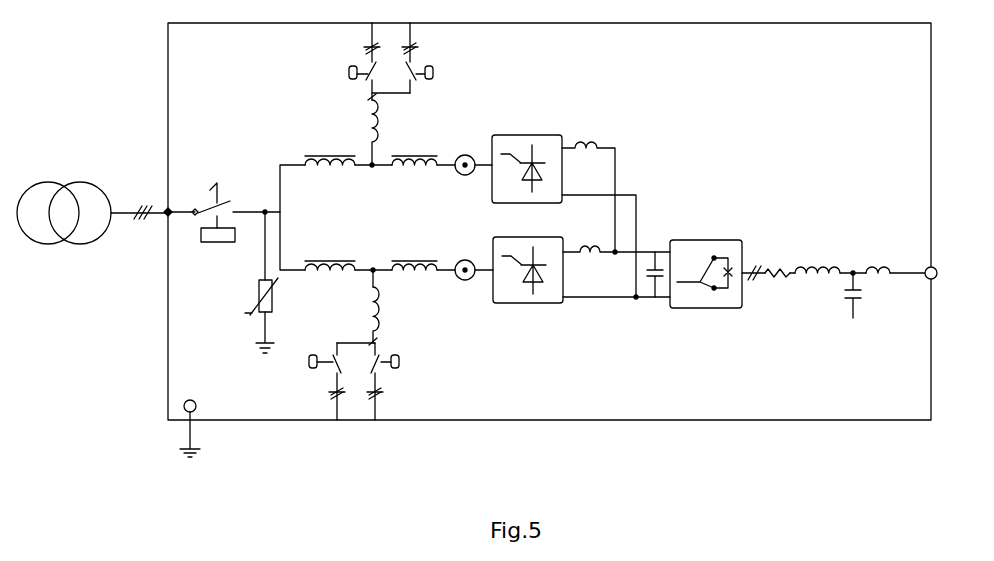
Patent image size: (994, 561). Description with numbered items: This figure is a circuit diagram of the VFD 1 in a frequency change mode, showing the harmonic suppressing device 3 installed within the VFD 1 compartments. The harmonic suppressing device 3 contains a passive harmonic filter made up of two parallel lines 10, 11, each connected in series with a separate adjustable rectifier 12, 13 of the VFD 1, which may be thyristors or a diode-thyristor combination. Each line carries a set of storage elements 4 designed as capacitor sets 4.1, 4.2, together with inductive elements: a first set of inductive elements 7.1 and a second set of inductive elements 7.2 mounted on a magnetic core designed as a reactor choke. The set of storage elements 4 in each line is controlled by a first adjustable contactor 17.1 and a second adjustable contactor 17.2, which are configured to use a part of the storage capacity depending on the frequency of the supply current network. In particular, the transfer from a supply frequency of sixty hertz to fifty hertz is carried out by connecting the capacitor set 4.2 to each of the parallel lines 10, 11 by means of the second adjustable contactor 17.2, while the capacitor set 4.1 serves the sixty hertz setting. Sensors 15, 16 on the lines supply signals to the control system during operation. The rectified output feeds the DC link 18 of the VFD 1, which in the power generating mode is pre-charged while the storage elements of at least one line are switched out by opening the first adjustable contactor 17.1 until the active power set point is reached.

The VFD 1 is at (549, 221).
The harmonic suppressing device 3 is at (706, 274).
The set of storage elements 4 is at (371, 221).
The capacitor set 4.1 is at (349, 43).
The capacitor set 4.2 is at (428, 43).
The first set of inductive elements 7.1 is at (380, 171).
The second set of inductive elements 7.2 is at (380, 257).
The parallel line 10 is at (367, 205).
The parallel line 11 is at (272, 282).
The adjustable rectifier 12 is at (528, 270).
The adjustable rectifier 13 is at (527, 169).
The sensor 15 is at (474, 262).
The sensor 16 is at (473, 175).
The first adjustable contactor 17.1 is at (348, 85).
The second adjustable contactor 17.2 is at (433, 86).
The DC link 18 is at (654, 266).